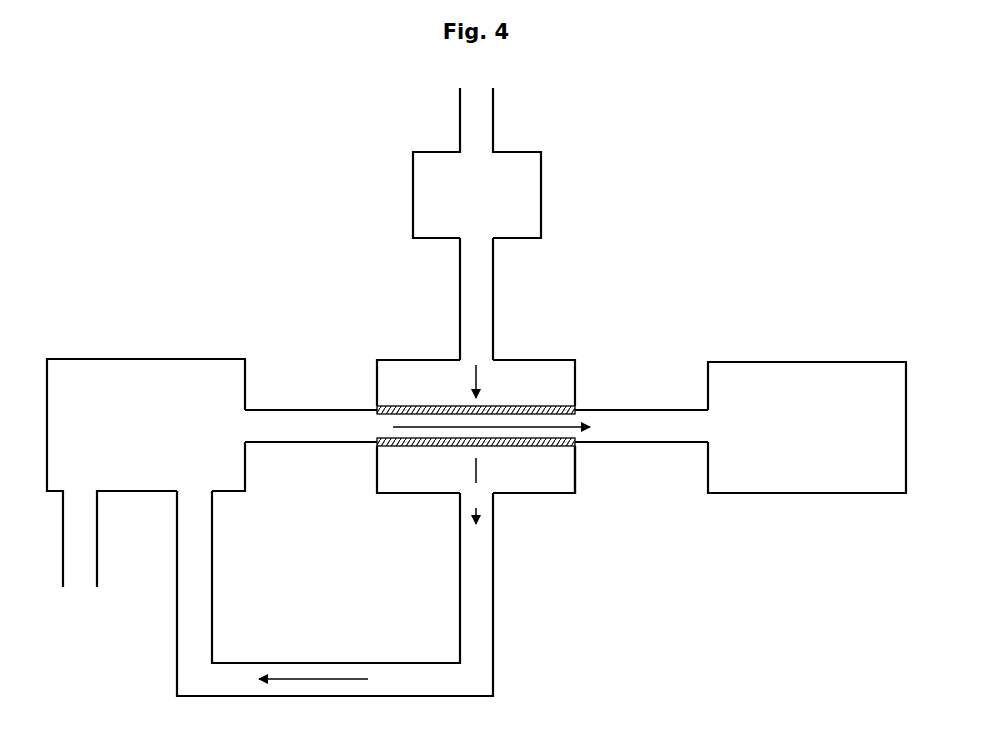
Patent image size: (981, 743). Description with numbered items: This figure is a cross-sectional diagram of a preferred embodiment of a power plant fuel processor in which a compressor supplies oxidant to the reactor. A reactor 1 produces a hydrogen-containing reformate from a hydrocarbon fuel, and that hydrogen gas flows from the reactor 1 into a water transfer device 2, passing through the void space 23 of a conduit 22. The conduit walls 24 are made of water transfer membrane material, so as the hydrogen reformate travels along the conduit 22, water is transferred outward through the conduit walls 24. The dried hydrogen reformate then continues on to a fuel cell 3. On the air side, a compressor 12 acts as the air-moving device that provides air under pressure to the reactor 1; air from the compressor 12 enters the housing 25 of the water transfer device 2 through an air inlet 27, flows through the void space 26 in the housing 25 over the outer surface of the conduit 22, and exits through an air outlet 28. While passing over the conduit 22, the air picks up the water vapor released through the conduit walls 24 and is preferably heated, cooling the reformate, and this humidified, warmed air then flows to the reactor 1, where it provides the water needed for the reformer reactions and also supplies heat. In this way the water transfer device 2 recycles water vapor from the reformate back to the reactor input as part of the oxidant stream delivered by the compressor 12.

The reactor 1 is at (127, 397).
The water transfer device 2 is at (512, 413).
The fuel cell 3 is at (830, 383).
The compressor 12 is at (541, 216).
The conduit 22 is at (417, 407).
The void space 23 is at (410, 430).
The conduit walls 24 is at (440, 447).
The housing 25 is at (575, 461).
The void space 26 is at (532, 480).
The air inlet 27 is at (459, 323).
The air outlet 28 is at (490, 513).